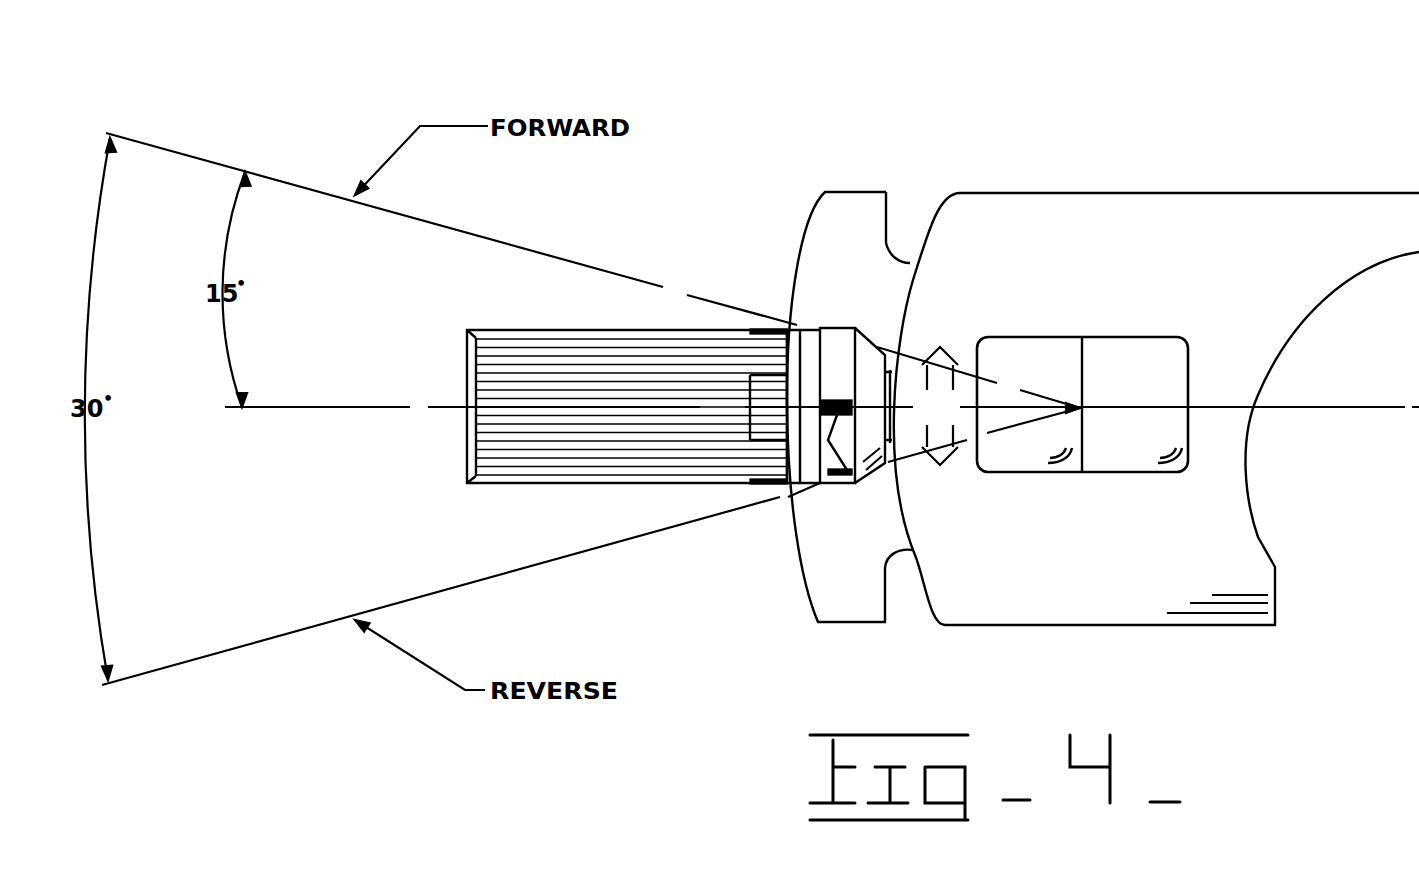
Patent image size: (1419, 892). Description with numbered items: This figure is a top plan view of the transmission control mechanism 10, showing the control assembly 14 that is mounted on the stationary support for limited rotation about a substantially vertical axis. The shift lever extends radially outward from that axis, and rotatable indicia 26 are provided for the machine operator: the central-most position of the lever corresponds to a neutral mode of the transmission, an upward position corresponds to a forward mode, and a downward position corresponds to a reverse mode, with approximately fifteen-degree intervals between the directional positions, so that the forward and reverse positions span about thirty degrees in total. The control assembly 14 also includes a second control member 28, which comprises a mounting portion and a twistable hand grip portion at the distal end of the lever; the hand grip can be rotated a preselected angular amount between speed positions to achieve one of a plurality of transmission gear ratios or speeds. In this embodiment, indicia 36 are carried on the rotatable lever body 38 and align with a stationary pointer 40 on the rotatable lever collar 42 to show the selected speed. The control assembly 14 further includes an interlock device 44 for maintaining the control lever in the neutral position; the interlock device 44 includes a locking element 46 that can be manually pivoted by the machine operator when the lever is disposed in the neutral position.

The transmission control mechanism 10 is at (1298, 645).
The control assembly 14 is at (1003, 143).
The rotatable indicia 26 is at (940, 336).
The second control member 28 is at (498, 313).
The indicia 36 is at (812, 327).
The rotatable lever body 38 is at (797, 330).
The stationary pointer 40 is at (847, 476).
The rotatable lever collar 42 is at (850, 342).
The interlock device 44 is at (1087, 315).
The locking element 46 is at (1157, 337).